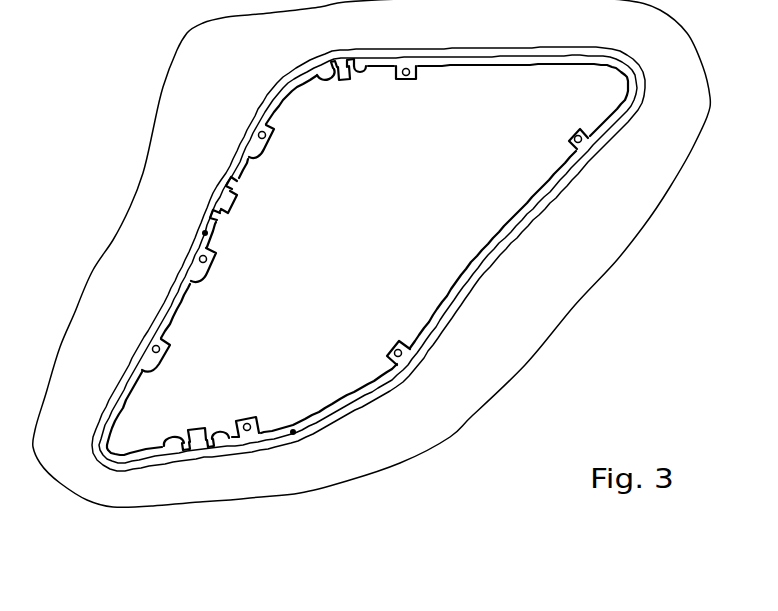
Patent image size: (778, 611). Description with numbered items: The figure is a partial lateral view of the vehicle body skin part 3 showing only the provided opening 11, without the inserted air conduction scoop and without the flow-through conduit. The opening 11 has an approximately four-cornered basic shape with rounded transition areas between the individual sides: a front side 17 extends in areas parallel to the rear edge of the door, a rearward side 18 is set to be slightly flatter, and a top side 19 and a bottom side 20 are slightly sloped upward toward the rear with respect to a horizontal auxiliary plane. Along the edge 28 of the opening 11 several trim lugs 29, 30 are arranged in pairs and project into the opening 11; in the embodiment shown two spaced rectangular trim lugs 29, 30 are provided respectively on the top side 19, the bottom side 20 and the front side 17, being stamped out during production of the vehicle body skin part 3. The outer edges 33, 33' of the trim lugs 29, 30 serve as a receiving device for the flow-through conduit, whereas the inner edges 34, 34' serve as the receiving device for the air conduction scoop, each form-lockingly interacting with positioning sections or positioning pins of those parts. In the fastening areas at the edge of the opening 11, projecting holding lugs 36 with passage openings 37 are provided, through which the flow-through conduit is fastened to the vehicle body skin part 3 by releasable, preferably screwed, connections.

The vehicle body skin part 3 is at (627, 223).
The opening 11 is at (395, 193).
The front side 17 is at (205, 233).
The rearward side 18 is at (482, 266).
The top side 19 is at (473, 53).
The bottom side 20 is at (293, 432).
The edge of the opening 28 is at (552, 67).
The trim lug 29 is at (323, 78).
The trim lug 30 is at (344, 66).
The outer edge of trim lug 33 is at (224, 256).
The outer edge of trim lug 33' is at (320, 246).
The inner edge of trim lug 34 is at (255, 255).
The inner edge of trim lug 34' is at (271, 253).
The holding lug 36 is at (256, 154).
The passage opening 37 is at (266, 126).